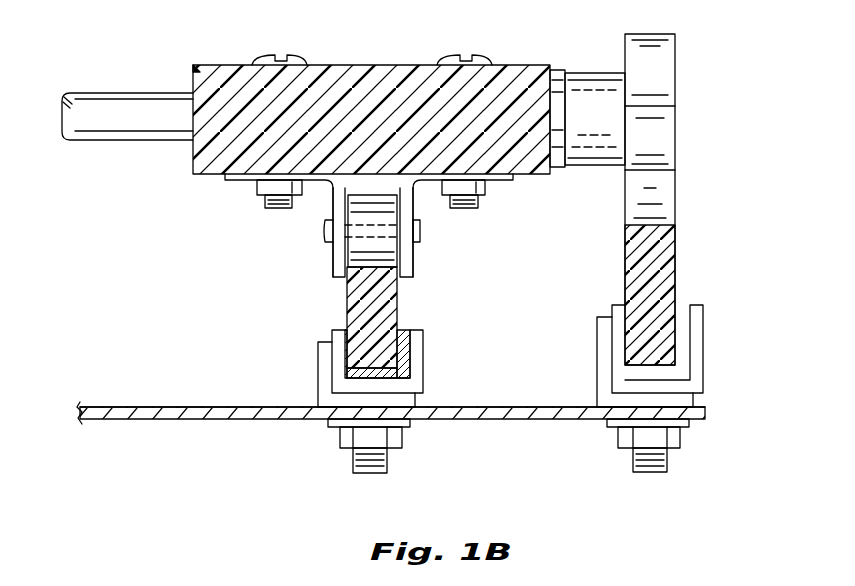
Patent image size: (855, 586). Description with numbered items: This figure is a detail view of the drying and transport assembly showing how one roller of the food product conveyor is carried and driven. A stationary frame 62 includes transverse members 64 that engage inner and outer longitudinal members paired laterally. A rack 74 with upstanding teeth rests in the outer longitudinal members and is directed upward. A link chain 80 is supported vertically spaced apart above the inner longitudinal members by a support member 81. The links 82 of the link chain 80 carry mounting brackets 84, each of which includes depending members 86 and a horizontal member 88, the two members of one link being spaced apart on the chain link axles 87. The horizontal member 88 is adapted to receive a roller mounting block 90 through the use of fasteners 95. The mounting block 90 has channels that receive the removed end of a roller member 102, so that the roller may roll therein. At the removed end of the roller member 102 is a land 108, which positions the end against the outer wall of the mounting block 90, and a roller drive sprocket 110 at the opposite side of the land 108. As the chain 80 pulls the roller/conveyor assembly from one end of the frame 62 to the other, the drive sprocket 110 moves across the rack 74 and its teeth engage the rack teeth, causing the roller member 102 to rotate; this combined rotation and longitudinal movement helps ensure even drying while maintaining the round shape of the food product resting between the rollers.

The frame 62 is at (237, 433).
The transverse members 64 is at (172, 420).
The rack 74 is at (678, 283).
The link chain 80 is at (413, 258).
The support member 81 is at (399, 305).
The links 82 is at (435, 250).
The mounting brackets 84 is at (305, 228).
The depending members 86 is at (333, 258).
The chain link axles 87 is at (421, 228).
The horizontal members 88 is at (243, 186).
The roller mounting block 90 is at (408, 65).
The fasteners 95 is at (273, 54).
The roller member 102 is at (156, 93).
The land 108 is at (553, 67).
The roller drive sprocket 110 is at (677, 92).